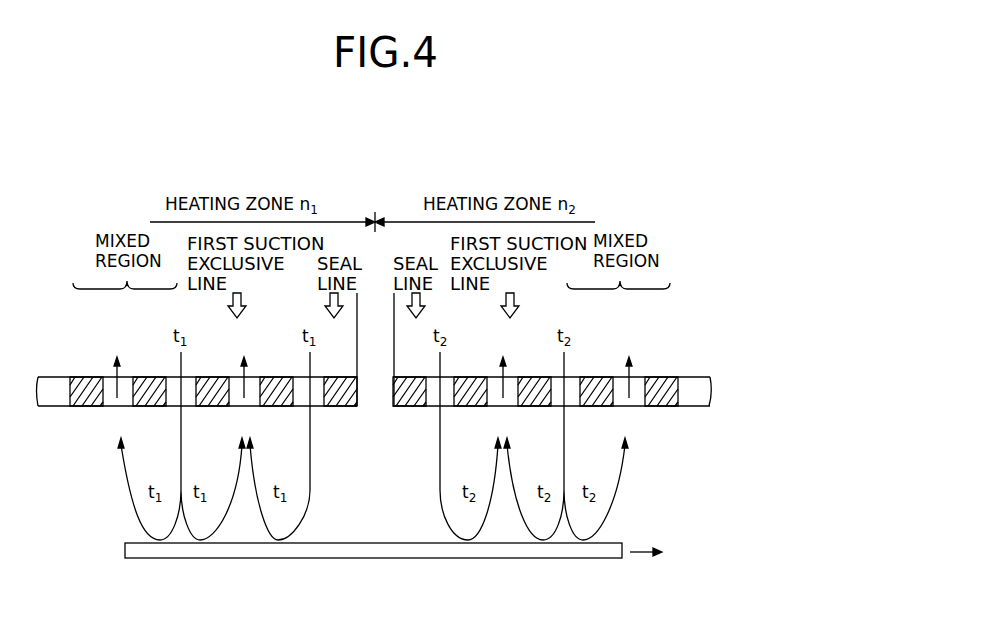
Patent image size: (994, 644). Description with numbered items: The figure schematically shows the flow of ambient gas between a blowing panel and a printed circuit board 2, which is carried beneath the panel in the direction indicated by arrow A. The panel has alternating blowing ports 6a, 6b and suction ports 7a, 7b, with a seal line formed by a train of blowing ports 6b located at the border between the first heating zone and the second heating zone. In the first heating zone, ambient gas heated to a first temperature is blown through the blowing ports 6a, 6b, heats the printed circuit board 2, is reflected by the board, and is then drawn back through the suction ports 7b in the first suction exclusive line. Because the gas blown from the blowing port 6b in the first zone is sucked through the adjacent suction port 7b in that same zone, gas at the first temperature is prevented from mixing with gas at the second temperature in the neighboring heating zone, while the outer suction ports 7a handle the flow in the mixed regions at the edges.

The printed circuit board 2 is at (583, 558).
The blowing port 6a is at (538, 440).
The blowing port 6b is at (413, 437).
The suction port 7a is at (650, 445).
The suction port 7b is at (470, 445).